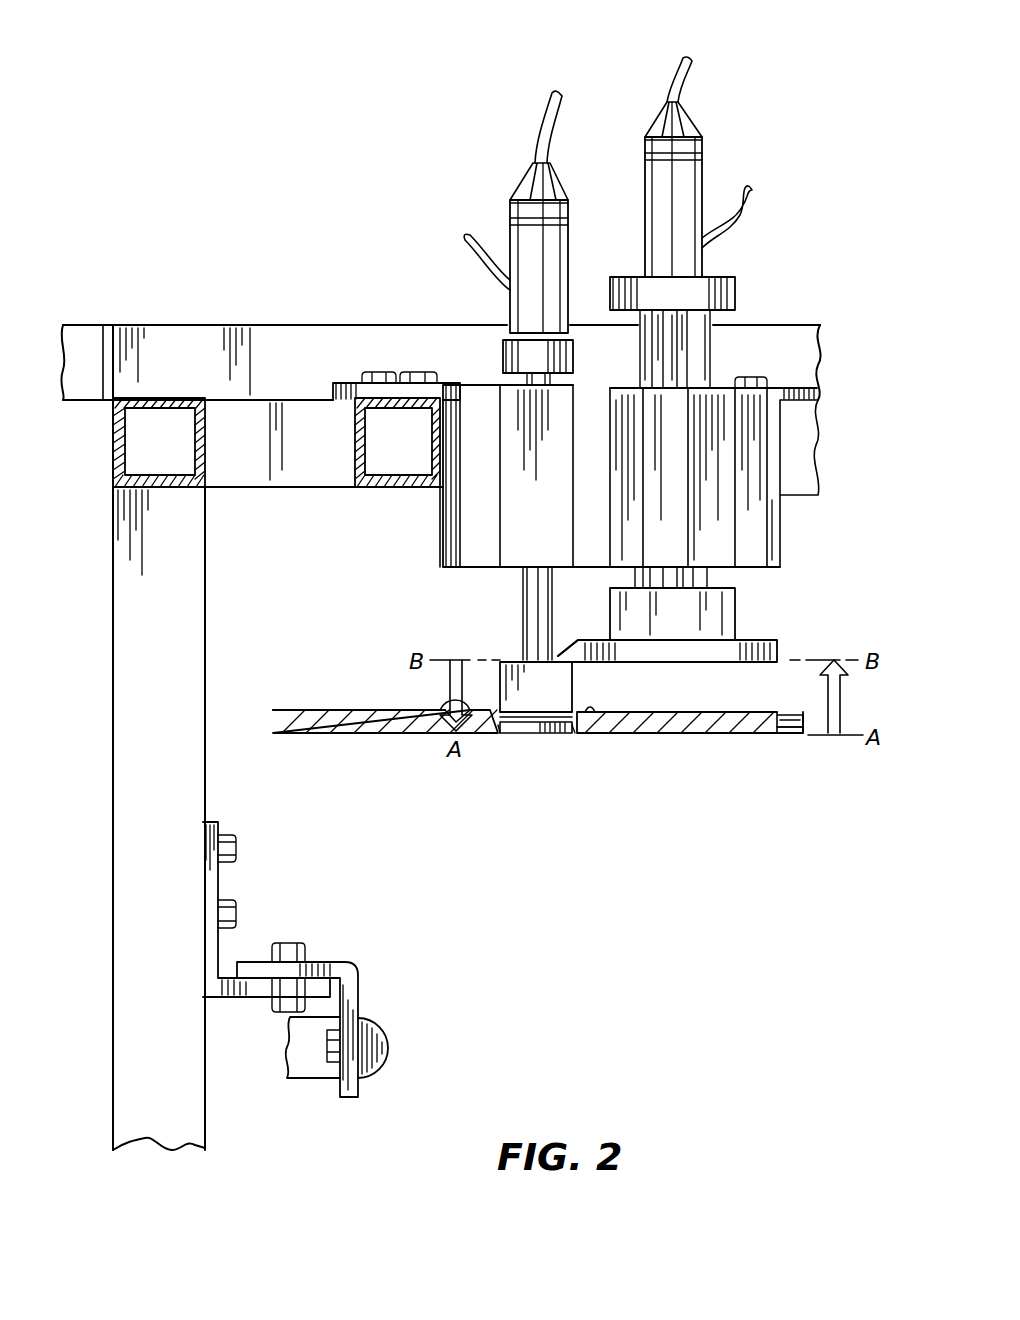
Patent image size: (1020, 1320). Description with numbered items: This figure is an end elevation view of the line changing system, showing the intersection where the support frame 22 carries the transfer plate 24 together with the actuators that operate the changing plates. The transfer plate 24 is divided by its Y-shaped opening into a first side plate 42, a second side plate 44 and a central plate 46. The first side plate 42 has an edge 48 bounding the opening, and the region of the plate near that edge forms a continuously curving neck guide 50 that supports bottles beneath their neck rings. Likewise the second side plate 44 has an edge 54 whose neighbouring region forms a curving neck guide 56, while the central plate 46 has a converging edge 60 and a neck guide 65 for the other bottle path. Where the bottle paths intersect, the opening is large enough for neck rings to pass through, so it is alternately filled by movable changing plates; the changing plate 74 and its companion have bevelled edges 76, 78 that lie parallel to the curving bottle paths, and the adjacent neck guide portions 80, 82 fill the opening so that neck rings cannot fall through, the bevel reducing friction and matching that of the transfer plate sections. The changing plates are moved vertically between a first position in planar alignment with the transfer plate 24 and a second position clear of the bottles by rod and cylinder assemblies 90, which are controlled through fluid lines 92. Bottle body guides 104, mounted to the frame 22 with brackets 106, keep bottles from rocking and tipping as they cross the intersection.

The support frame 22 is at (440, 737).
The transfer plate 24 is at (365, 735).
The first side plate 42 is at (301, 722).
The second side plate 44 is at (800, 736).
The central plate 46 is at (680, 735).
The edge of first side plate 48 is at (505, 736).
The curving neck guide 50 is at (460, 697).
The edge of second side plate 54 is at (787, 736).
The curving neck guide 56 is at (788, 714).
The first converging edge 60 is at (563, 733).
The neck guide 65 is at (595, 733).
The changing plate 74 is at (665, 650).
The edge of changing plate 76 is at (523, 733).
The edge of changing plate 78 is at (523, 656).
The neck guide portion 80 is at (538, 712).
The neck guide portion 82 is at (572, 642).
The rod and cylinder assembly 90 is at (563, 360).
The fluid line 92 is at (549, 136).
The bottle body guide 104 is at (383, 1052).
The bracket 106 is at (343, 962).